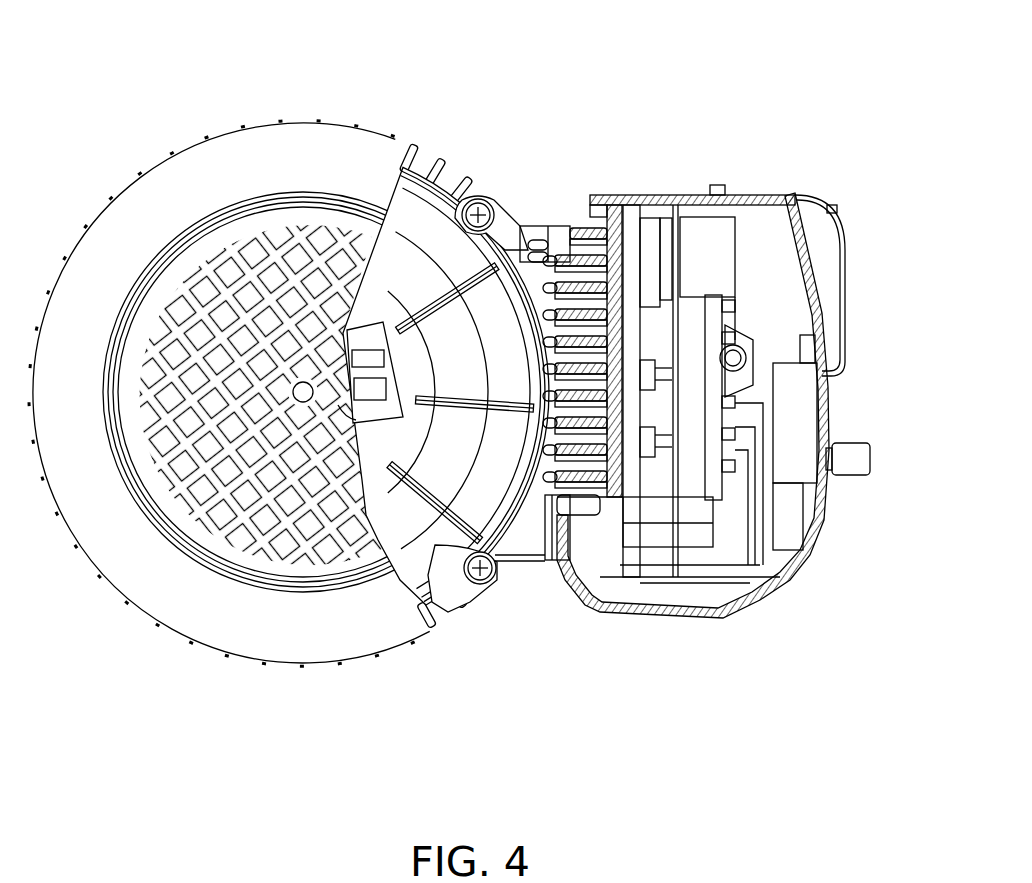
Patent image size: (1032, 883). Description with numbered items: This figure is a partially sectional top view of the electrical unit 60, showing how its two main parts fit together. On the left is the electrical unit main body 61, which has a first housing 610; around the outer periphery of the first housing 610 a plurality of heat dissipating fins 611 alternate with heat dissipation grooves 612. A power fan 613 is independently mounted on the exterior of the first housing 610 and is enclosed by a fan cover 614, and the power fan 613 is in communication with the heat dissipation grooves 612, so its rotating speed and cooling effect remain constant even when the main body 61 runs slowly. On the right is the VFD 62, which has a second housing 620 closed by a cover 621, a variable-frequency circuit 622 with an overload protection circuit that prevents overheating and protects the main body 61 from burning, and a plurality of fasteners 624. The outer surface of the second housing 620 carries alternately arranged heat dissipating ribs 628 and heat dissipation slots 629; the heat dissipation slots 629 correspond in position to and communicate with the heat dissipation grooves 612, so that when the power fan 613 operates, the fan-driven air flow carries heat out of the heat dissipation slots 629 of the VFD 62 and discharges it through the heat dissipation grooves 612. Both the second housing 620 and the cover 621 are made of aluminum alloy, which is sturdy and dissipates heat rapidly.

The lamp module 60 is at (476, 364).
The electrical unit main body 61 is at (266, 378).
The first housing 610 is at (416, 207).
The heat dissipating fins 611 is at (532, 485).
The heat dissipation grooves 612 is at (543, 228).
The power fan 613 is at (375, 525).
The fan cover 614 is at (135, 575).
The VFD 62 is at (733, 361).
The second housing 620 is at (688, 203).
The cover 621 is at (820, 297).
The variable-frequency circuit 622 is at (650, 243).
The fasteners 624 is at (650, 343).
The heat dissipating ribs 628 is at (583, 467).
The heat dissipation slots 629 is at (571, 280).